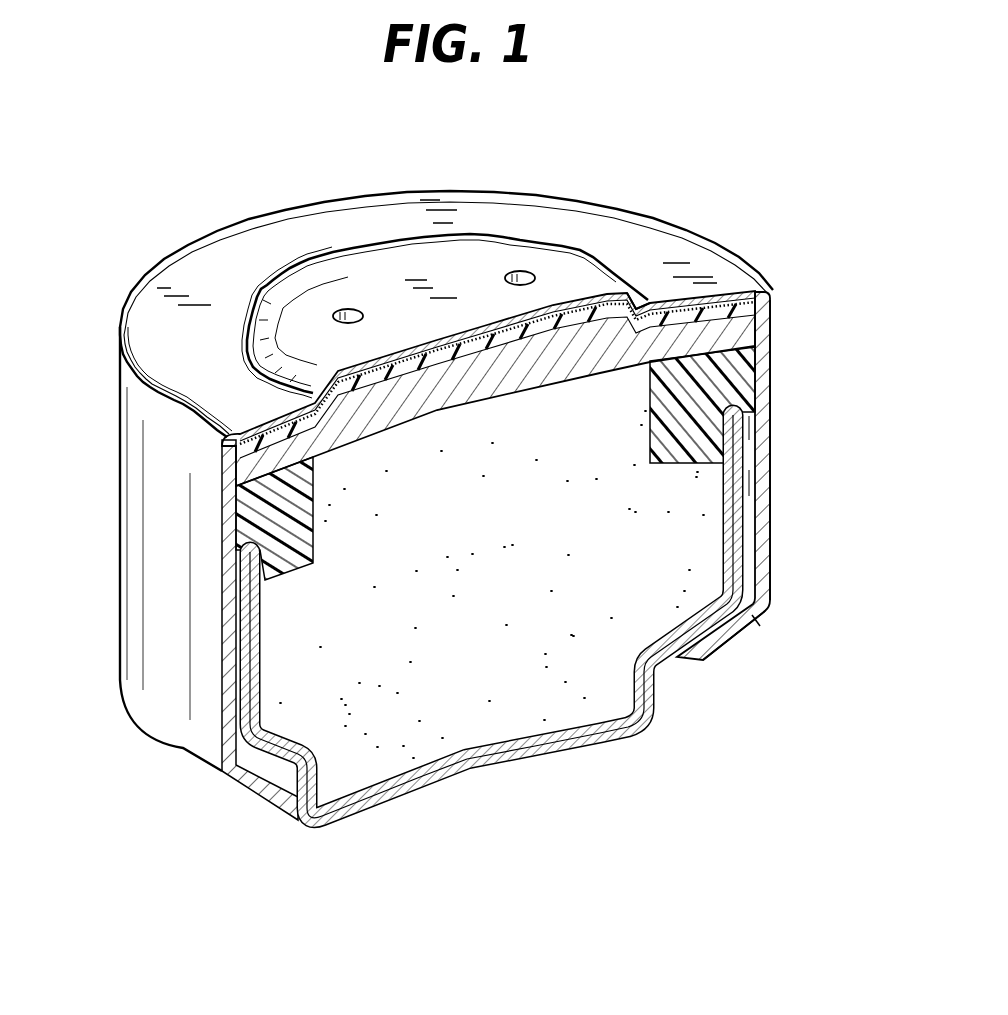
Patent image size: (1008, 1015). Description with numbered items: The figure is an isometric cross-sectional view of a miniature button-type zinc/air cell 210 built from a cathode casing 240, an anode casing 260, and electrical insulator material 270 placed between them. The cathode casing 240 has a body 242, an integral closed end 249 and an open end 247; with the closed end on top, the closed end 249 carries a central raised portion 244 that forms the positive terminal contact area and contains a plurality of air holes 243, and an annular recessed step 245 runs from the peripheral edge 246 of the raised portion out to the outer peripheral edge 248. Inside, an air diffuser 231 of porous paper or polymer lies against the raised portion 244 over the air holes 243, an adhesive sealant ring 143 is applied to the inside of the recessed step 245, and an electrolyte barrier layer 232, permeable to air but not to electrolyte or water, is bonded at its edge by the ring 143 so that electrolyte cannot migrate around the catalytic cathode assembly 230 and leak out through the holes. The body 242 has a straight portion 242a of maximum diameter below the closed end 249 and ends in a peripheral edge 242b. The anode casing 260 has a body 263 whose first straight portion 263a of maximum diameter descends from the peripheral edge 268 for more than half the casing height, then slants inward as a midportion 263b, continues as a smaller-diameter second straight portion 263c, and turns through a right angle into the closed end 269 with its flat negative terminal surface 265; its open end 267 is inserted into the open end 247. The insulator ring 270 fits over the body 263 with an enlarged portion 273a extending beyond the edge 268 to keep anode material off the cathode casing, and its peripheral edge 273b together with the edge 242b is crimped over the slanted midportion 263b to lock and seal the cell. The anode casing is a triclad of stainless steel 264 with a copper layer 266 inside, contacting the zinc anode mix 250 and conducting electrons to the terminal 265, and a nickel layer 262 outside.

The zinc/air cell 210 is at (220, 186).
The outer peripheral edge 248 is at (118, 328).
The closed end of cathode casing 249 is at (183, 262).
The annular recessed step 245 is at (620, 211).
The peripheral edge of raised terminal portion 246 is at (303, 268).
The raised portion 244 is at (470, 258).
The air holes 243 is at (348, 311).
The cathode casing 240 is at (660, 237).
The air diffuser 231 is at (657, 297).
The adhesive sealant ring 143 is at (265, 423).
The electrolyte barrier layer 232 is at (752, 309).
The catalytic cathode assembly 230 is at (750, 328).
The enlarged portion of insulator ring 273a is at (720, 372).
The open end of anode casing 267 is at (238, 537).
The peripheral edge of anode casing 268 is at (752, 428).
The body of cathode casing 242 is at (773, 445).
The straight portion of cathode casing body 242a is at (768, 553).
The peripheral edge of cathode casing 242b is at (706, 653).
The electrical insulator material 270 is at (750, 484).
The peripheral edge of insulator ring 273b is at (757, 623).
The body of anode casing 263 is at (250, 630).
The first straight body portion 263a is at (735, 519).
The slanted midportion 263b is at (667, 659).
The second straight portion 263c is at (660, 691).
The anode casing 260 is at (658, 734).
The zinc anode mix 250 is at (573, 704).
The nickel layer 262 is at (560, 756).
The stainless steel 264 is at (503, 754).
The negative terminal surface 265 is at (433, 788).
The closed end of anode casing 269 is at (390, 808).
The copper layer 266 is at (357, 806).
The open end of cathode casing 247 is at (272, 789).